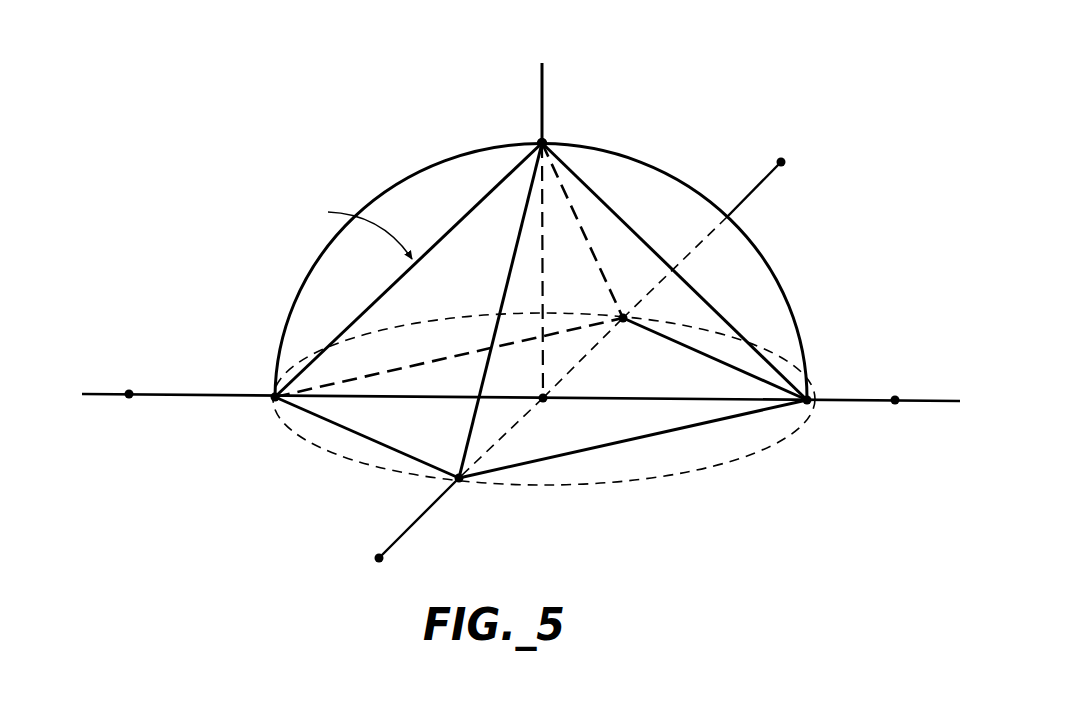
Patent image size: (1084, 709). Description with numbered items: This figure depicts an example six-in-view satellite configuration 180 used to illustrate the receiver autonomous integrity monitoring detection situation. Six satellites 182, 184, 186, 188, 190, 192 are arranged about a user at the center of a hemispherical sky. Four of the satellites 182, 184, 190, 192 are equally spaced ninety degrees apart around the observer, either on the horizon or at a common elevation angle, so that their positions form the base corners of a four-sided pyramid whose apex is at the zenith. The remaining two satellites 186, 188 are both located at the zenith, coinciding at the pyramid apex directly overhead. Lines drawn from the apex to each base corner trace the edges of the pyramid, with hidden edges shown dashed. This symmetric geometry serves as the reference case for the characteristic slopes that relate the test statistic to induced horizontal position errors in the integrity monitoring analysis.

The satellite constellation geometry (four sided pyramid) 180 is at (208, 498).
The satellite 182 is at (896, 405).
The satellite 184 is at (785, 167).
The satellite 186 is at (539, 139).
The satellite 188 is at (500, 122).
The satellite 190 is at (130, 400).
The satellite 192 is at (377, 553).